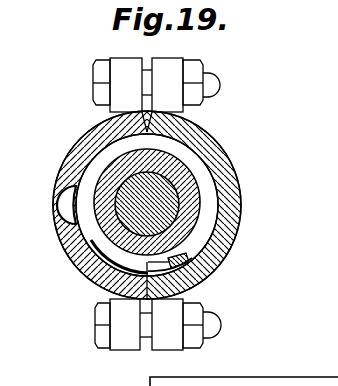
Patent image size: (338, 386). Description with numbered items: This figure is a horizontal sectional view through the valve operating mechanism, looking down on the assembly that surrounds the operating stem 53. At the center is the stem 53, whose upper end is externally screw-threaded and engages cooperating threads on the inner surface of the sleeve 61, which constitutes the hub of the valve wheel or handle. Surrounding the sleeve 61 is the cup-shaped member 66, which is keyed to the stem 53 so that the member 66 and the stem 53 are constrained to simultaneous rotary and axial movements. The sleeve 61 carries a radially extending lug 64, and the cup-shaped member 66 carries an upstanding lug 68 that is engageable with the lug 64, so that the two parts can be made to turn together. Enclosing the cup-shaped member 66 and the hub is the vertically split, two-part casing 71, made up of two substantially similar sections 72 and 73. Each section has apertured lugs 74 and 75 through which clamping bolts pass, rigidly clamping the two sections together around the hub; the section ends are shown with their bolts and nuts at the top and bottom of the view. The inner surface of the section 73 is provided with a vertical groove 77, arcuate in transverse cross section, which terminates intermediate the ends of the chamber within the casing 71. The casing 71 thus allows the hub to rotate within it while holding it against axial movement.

The operating stem 53 is at (176, 172).
The sleeve 61 is at (196, 178).
The radially extending lug 64 is at (133, 265).
The cup-shaped member 66 is at (207, 195).
The upstanding lug 68 is at (162, 265).
The two-part casing 71 is at (249, 225).
The casing section 72 is at (228, 245).
The casing section 73 is at (66, 245).
The apertured lug 74 is at (170, 67).
The apertured lug 75 is at (135, 52).
The vertical groove 77 is at (62, 204).